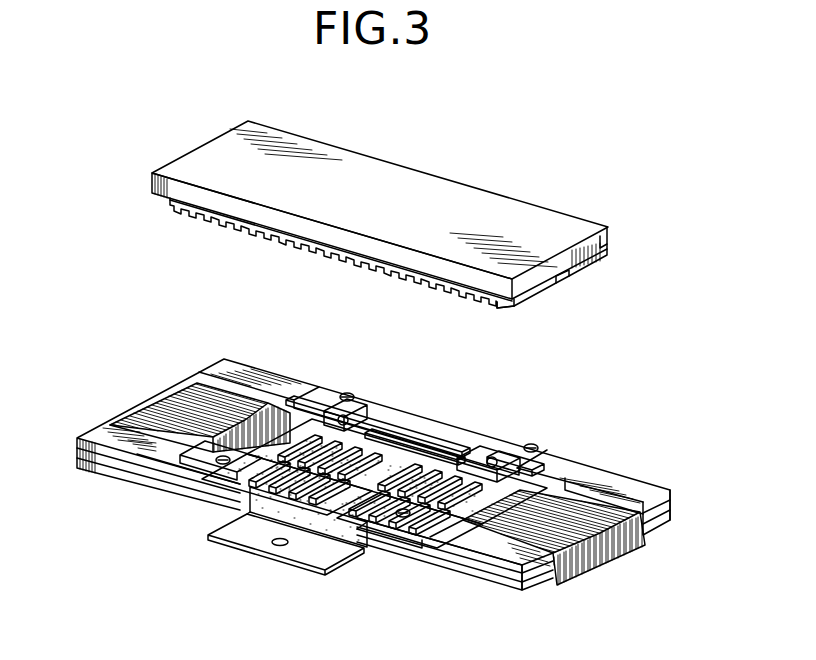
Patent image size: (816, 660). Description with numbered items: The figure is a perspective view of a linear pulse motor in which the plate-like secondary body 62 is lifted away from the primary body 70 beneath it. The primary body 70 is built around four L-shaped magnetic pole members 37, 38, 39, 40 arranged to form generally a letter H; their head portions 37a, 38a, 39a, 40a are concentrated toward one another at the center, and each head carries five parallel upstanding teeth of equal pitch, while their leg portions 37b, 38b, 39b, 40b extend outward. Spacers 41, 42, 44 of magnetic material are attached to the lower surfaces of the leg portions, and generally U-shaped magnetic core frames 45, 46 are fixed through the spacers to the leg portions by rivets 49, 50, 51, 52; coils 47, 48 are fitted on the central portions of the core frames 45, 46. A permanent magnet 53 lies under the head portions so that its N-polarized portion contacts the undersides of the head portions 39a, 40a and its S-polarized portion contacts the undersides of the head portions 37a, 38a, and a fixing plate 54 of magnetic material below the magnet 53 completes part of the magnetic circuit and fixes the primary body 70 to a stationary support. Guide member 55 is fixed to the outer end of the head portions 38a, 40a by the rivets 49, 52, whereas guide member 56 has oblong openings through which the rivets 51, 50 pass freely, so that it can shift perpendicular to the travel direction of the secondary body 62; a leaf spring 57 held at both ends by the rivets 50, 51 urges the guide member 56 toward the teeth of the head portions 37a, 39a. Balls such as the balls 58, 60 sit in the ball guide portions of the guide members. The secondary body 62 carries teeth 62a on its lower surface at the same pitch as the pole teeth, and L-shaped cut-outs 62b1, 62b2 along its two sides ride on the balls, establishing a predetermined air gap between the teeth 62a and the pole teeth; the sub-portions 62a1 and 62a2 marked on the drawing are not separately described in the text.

The primary body 70 is at (105, 195).
The secondary body 62 is at (420, 210).
The teeth of the secondary body 62a is at (584, 282).
The notch in cover end face 62a1 is at (563, 283).
The upper portion of cover end face 62a2 is at (600, 264).
The cut-out 62b1 is at (512, 304).
The cut-out 62b2 is at (608, 241).
The magnetic core frame 46 is at (115, 473).
The spacer 44 is at (190, 490).
The spacer 42 is at (462, 576).
The spacer 41 is at (672, 504).
The magnetic core frame 45 is at (530, 592).
The leg portion 40b is at (100, 430).
The leg portion 39b is at (226, 362).
The leg portion 37b is at (615, 482).
The leg portion 38b is at (506, 553).
The magnetic pole member 38 is at (486, 561).
The coil 48 is at (176, 412).
The coil 47 is at (604, 550).
The fixing plate 54 is at (298, 576).
The permanent magnet 53 is at (312, 550).
The guide member 55 is at (360, 530).
The magnetic pole member 39 is at (424, 437).
The head portion 39a is at (330, 404).
The magnetic pole member 37 is at (461, 449).
The head portion 37a is at (492, 466).
The magnetic pole member 40 is at (248, 479).
The head portion 40a is at (262, 500).
The head portion 38a is at (398, 522).
The ball 60 is at (382, 424).
The guide member 56 is at (412, 444).
The leaf spring 57 is at (543, 463).
The rivet 51 is at (349, 392).
The ball 58 is at (498, 458).
The rivet 50 is at (536, 445).
The rivet 52 is at (221, 465).
The rivet 49 is at (405, 518).